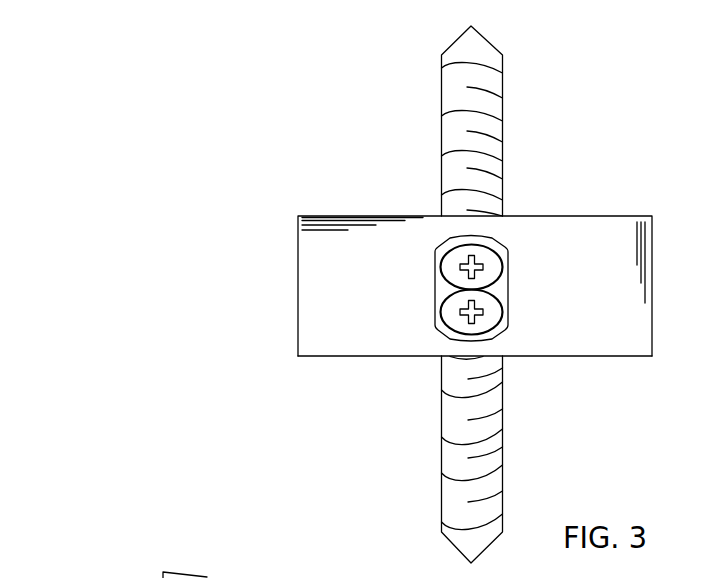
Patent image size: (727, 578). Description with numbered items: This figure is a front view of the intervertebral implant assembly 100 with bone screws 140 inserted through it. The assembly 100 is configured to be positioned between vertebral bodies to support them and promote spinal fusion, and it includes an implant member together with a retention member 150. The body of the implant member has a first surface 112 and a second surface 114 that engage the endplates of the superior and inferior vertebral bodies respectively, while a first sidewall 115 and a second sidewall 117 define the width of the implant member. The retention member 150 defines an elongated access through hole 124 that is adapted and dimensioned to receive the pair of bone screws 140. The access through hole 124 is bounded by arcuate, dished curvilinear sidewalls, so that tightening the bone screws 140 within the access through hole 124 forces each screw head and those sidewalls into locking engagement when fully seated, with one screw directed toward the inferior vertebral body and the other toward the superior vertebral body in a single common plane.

The intervertebral implant assembly 100 is at (141, 288).
The first surface 112 is at (543, 216).
The second surface 114 is at (592, 357).
The first sidewall 115 is at (652, 267).
The second sidewall 117 is at (297, 235).
The access through hole 124 is at (437, 289).
The bone screws 140 is at (492, 308).
The retention member 150 is at (310, 577).